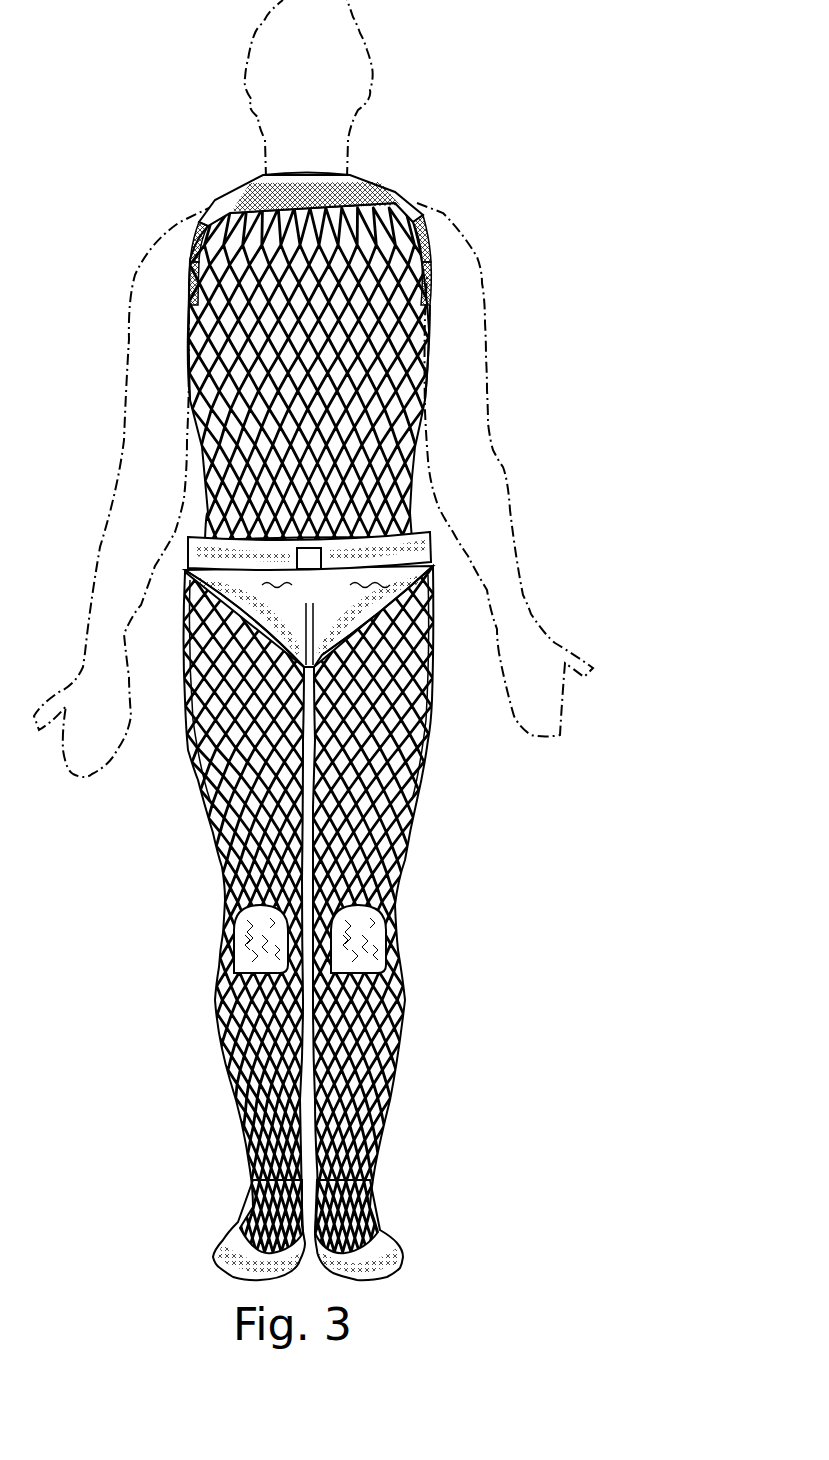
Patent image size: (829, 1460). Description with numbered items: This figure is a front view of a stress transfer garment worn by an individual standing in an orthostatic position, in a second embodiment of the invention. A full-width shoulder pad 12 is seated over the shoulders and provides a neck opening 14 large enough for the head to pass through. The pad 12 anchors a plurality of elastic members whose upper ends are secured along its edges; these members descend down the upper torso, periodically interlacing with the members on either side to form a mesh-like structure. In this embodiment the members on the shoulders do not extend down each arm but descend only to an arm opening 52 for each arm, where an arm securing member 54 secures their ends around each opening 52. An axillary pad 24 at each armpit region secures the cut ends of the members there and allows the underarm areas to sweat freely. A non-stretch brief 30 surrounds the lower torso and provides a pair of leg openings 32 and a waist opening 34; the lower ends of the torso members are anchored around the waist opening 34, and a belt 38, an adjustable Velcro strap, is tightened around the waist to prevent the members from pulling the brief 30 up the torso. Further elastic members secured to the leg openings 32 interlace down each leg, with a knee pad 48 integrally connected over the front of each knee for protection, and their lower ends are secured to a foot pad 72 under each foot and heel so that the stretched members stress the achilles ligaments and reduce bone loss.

The shoulder pad 12 is at (380, 190).
The neck opening 14 is at (305, 178).
The axillary pad 24 is at (190, 350).
The brief 30 is at (400, 585).
The leg openings 32 is at (190, 624).
The waist opening 34 is at (252, 546).
The belt 38 is at (392, 512).
The knee pads 48 is at (253, 930).
The arm opening 52 is at (190, 282).
The arm securing member 54 is at (195, 243).
The foot pad 72 is at (213, 1258).